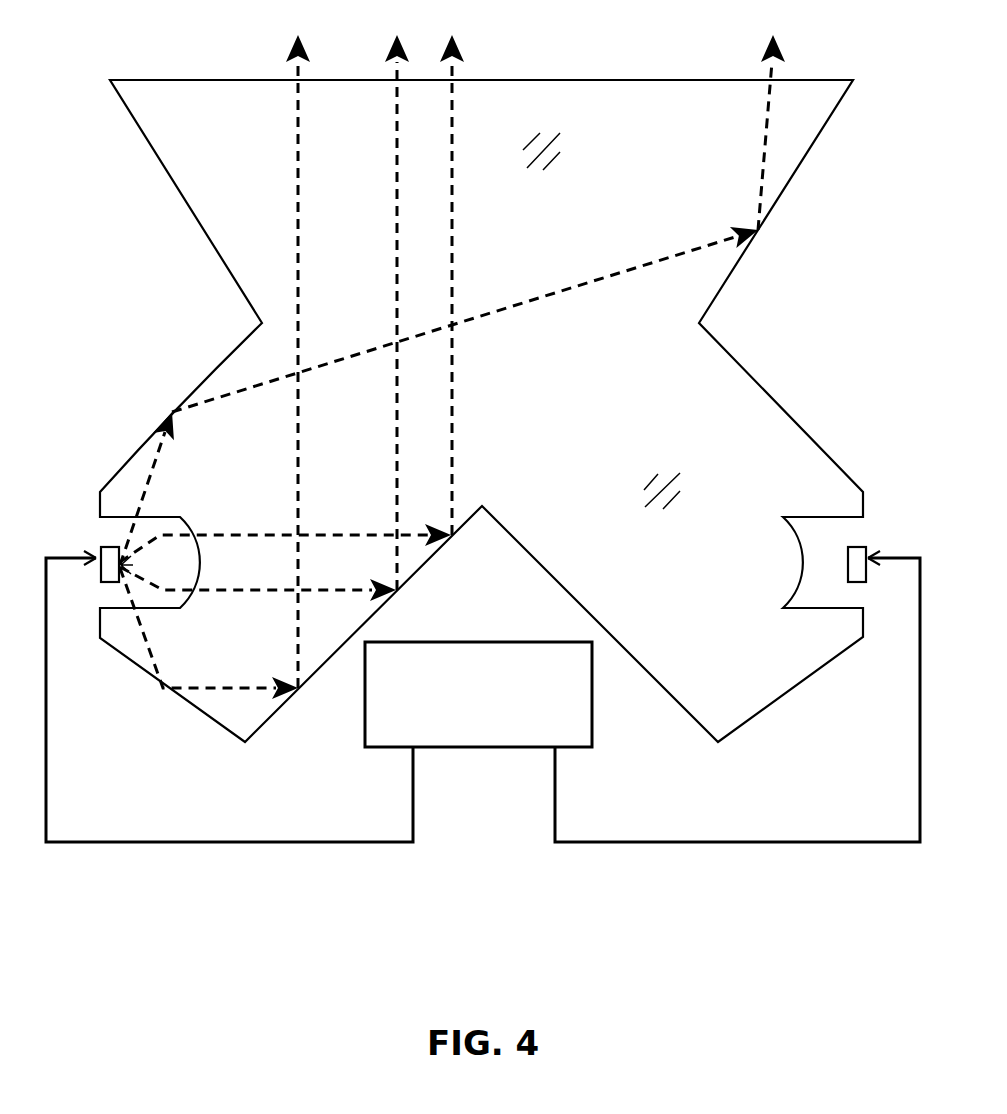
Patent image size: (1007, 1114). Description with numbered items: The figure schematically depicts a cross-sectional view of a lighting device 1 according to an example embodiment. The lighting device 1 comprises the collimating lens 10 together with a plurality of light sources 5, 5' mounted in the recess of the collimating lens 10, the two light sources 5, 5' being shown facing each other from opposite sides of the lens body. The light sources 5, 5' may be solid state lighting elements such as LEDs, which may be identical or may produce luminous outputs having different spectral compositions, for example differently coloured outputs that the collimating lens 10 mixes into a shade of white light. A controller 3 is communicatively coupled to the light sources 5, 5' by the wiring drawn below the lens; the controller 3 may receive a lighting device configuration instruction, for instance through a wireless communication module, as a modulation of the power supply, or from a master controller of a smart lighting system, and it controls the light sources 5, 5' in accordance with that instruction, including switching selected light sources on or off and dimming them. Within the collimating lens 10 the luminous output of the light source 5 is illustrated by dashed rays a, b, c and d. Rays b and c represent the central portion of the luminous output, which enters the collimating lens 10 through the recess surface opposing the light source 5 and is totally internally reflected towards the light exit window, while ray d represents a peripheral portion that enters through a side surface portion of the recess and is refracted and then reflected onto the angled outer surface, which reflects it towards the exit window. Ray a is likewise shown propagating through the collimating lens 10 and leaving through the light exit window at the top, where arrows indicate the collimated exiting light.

The lighting device 1 is at (485, 512).
The controller 3 is at (495, 728).
The light source 5 is at (89, 526).
The light source 5' is at (887, 526).
The collimating lens 10 is at (733, 410).
The ray a is at (209, 375).
The ray b is at (258, 345).
The ray c is at (286, 312).
The ray d is at (446, 313).